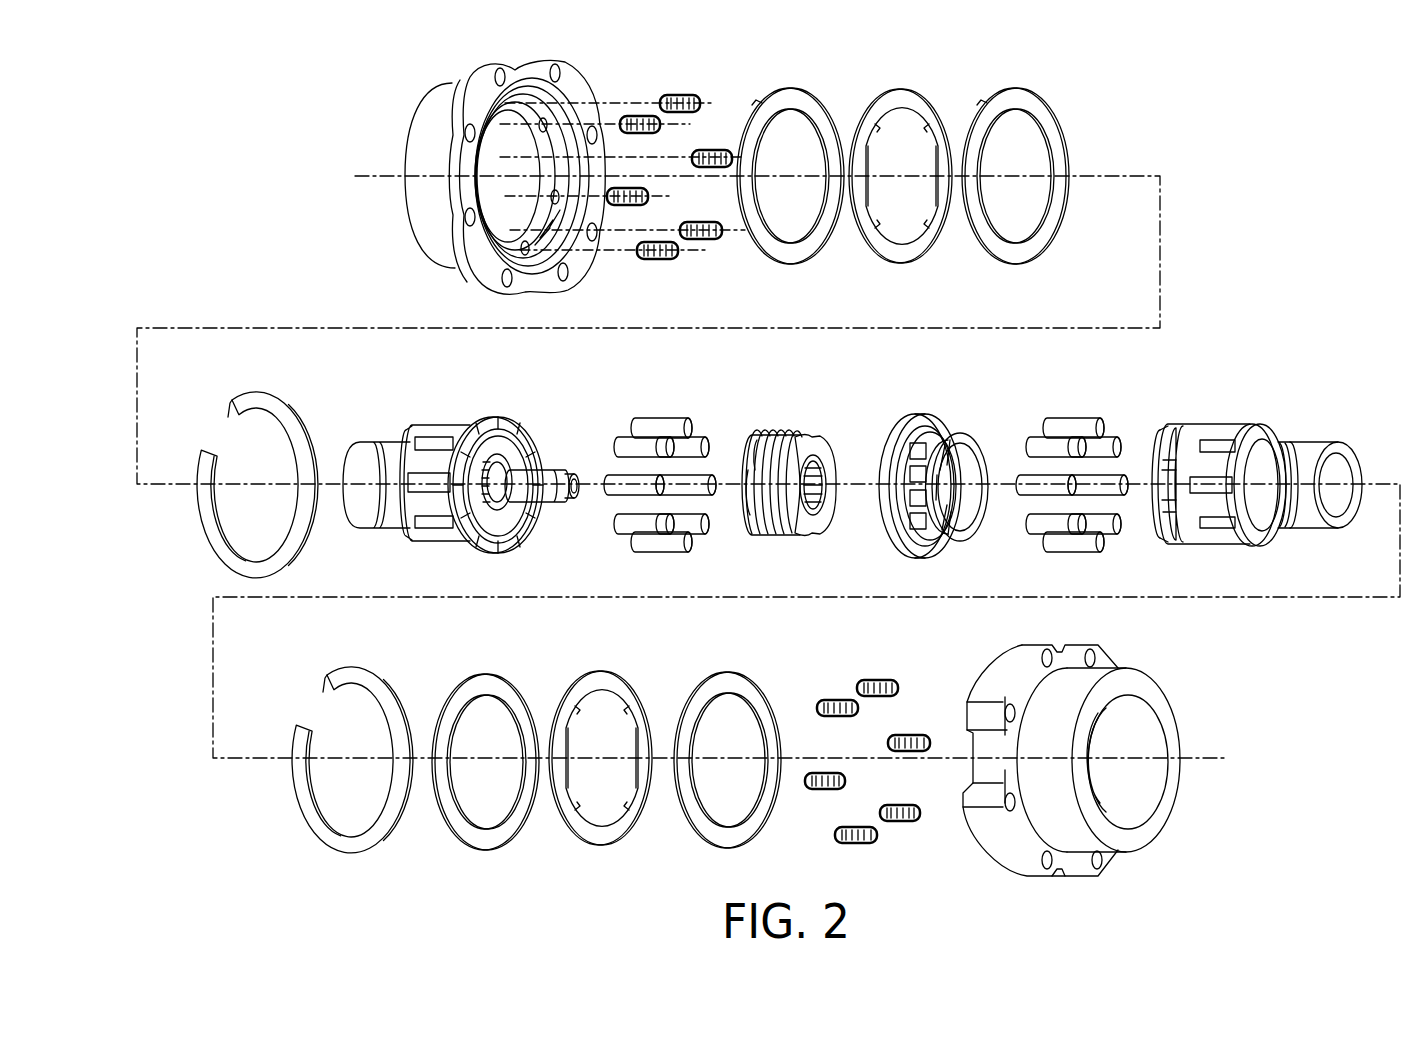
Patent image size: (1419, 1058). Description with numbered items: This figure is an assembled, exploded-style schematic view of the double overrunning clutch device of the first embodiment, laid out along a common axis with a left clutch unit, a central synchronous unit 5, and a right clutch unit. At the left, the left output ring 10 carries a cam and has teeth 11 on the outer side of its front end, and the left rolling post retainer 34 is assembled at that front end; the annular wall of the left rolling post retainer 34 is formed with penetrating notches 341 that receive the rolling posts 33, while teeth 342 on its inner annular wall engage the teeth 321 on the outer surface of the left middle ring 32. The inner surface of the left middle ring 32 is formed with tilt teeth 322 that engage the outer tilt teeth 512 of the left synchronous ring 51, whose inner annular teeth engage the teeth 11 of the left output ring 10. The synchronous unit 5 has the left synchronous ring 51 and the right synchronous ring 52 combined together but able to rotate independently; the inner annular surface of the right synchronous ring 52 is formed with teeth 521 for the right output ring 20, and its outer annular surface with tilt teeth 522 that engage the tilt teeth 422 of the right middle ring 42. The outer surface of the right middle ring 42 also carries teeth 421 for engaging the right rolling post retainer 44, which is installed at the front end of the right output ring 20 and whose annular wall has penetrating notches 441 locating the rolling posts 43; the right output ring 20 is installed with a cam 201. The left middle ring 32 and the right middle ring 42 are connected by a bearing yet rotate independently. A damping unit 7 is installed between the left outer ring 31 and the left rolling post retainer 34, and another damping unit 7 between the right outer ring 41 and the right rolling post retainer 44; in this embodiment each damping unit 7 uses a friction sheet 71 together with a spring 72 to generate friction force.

The synchronous unit 5 is at (799, 467).
The damping unit 7 is at (908, 255).
The left output ring 10 is at (397, 528).
The teeth 11 is at (533, 548).
The right output ring 20 is at (1315, 494).
The left outer ring 31 is at (470, 280).
The left middle ring 32 is at (911, 500).
The rolling posts 33 is at (650, 415).
The left rolling post retainer 34 is at (478, 466).
The right outer ring 41 is at (1112, 667).
The right middle ring 42 is at (924, 475).
The rolling posts 43 is at (1072, 417).
The right rolling post retainer 44 is at (1243, 449).
The left synchronous ring 51 is at (753, 513).
The right synchronous ring 52 is at (792, 537).
The friction sheet 71 is at (795, 258).
The spring 72 is at (652, 258).
The cam 201 is at (1267, 533).
The teeth 321 is at (880, 503).
The tilt teeth 322 is at (953, 537).
The penetrating notch 341 is at (440, 433).
The teeth 342 is at (542, 530).
The teeth 421 is at (920, 537).
The tilt teeth 422 is at (968, 452).
The penetrating notch 441 is at (1215, 447).
The outer tilt teeth 512 is at (765, 440).
The teeth 521 is at (817, 463).
The tilt teeth 522 is at (795, 433).